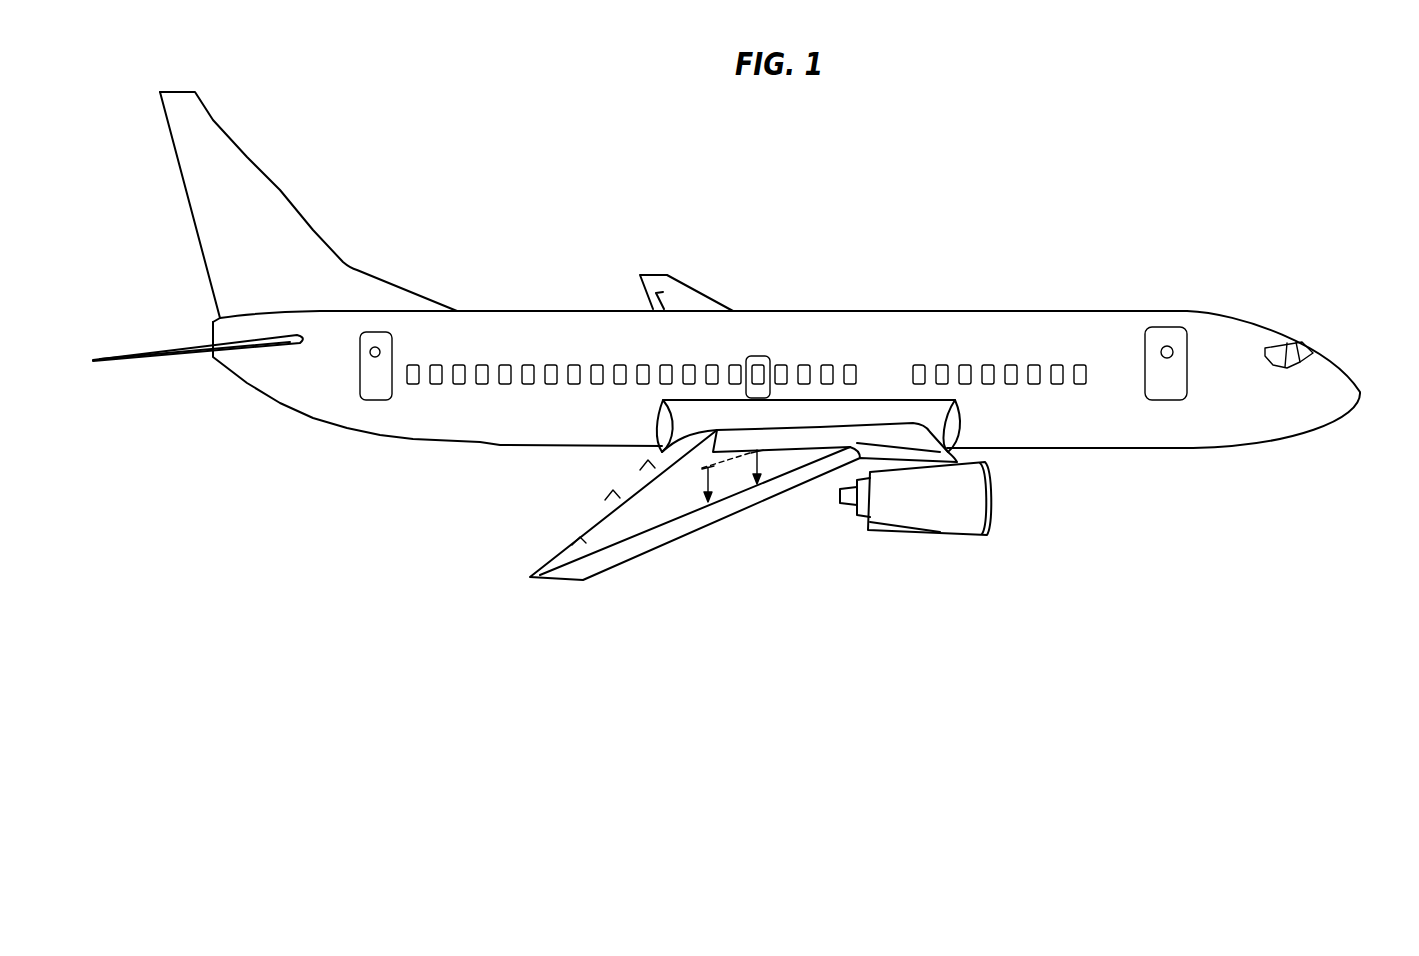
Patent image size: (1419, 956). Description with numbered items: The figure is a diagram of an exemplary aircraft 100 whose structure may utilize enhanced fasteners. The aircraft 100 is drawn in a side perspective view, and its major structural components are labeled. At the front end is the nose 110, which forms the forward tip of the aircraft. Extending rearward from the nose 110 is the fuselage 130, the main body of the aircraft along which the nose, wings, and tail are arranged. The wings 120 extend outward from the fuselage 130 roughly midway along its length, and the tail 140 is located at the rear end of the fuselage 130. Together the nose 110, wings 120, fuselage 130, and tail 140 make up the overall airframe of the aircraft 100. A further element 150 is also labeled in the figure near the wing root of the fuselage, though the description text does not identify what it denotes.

The aircraft 100 is at (752, 394).
The nose 110 is at (1333, 370).
The wings 120 is at (622, 538).
The fuselage 130 is at (898, 323).
The tail 140 is at (217, 180).
The wing-to-body fairing 150 is at (882, 397).